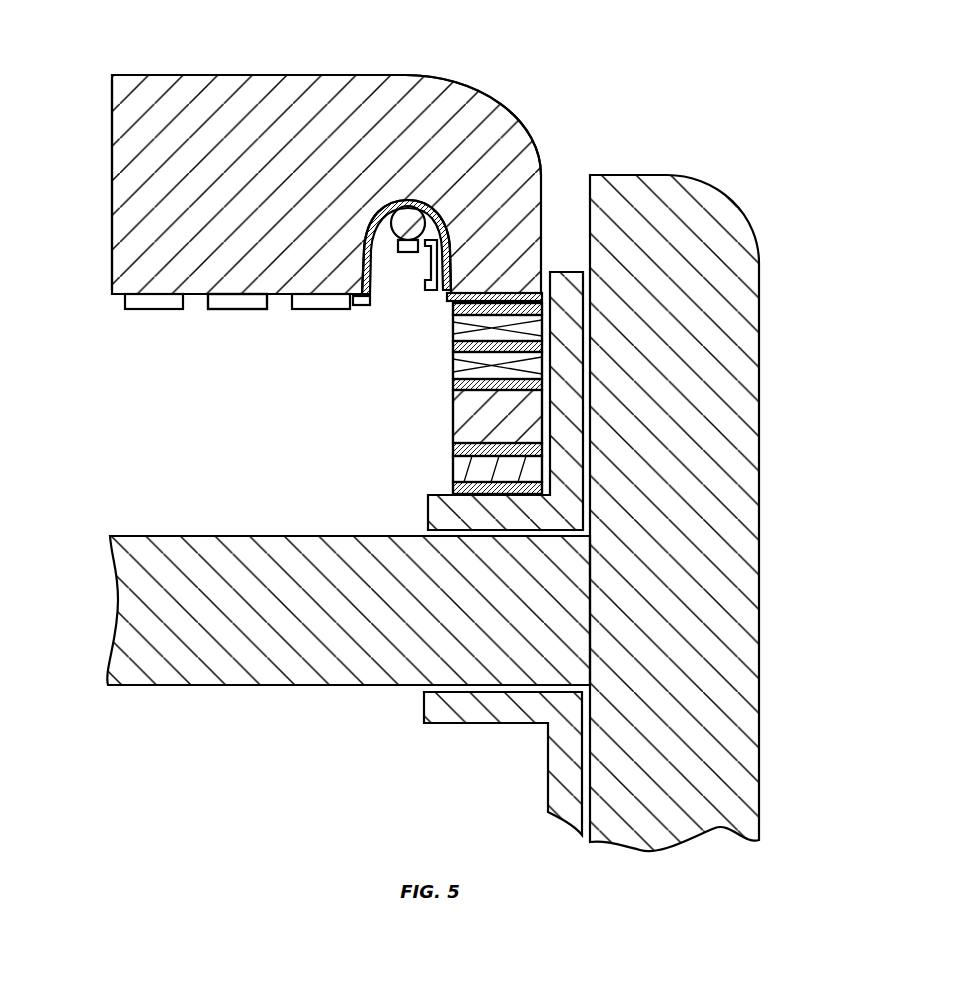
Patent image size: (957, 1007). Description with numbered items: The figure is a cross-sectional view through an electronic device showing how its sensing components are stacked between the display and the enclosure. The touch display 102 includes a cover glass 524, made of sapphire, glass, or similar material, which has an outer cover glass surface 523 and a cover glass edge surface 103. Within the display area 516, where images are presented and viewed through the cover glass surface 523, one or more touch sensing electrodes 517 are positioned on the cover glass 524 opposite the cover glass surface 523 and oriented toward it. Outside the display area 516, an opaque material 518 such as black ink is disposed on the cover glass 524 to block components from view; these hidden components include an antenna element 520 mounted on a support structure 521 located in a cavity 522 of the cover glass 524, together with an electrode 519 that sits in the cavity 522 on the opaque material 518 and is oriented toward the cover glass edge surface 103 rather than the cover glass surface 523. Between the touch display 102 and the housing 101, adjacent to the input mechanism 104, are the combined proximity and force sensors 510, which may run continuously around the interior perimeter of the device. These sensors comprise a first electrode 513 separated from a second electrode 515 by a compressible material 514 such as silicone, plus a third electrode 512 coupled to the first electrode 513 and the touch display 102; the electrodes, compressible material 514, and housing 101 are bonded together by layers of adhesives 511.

The housing 101 is at (568, 272).
The touch display 102 is at (340, 75).
The cover glass edge surface 103 is at (528, 128).
The input mechanism 104 is at (760, 312).
The combined proximity and force sensors 510 is at (432, 399).
The layers of adhesives 511 is at (453, 309).
The third electrode 512 is at (453, 328).
The first electrode 513 is at (453, 366).
The compressible material 514 is at (453, 417).
The second electrode 515 is at (462, 468).
The display area 516 is at (112, 354).
The touch sensing electrodes 517 is at (238, 310).
The opaque material 518 is at (456, 279).
The electrode 519 is at (453, 256).
The antenna element 520 is at (410, 253).
The support structure 521 is at (411, 206).
The cavity 522 is at (438, 212).
The cover glass surface 523 is at (226, 75).
The cover glass 524 is at (101, 75).